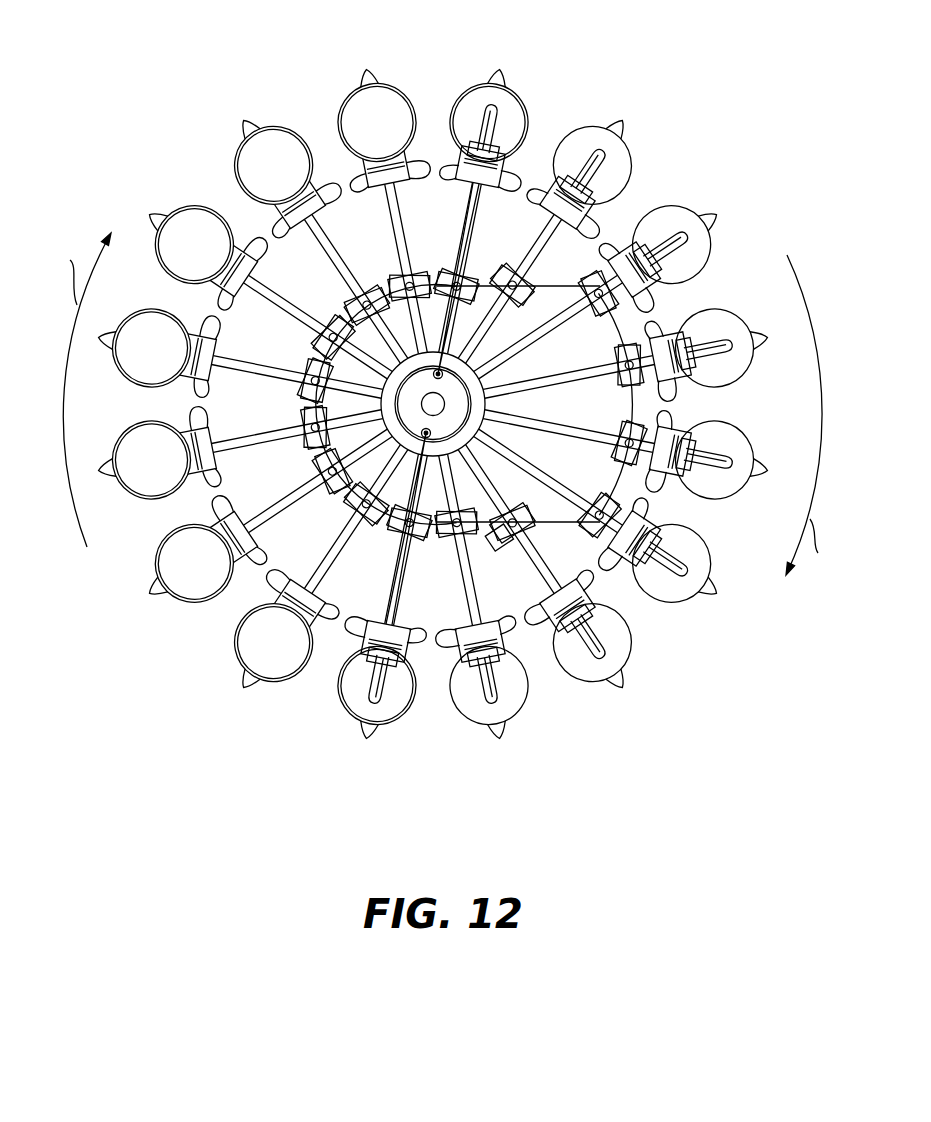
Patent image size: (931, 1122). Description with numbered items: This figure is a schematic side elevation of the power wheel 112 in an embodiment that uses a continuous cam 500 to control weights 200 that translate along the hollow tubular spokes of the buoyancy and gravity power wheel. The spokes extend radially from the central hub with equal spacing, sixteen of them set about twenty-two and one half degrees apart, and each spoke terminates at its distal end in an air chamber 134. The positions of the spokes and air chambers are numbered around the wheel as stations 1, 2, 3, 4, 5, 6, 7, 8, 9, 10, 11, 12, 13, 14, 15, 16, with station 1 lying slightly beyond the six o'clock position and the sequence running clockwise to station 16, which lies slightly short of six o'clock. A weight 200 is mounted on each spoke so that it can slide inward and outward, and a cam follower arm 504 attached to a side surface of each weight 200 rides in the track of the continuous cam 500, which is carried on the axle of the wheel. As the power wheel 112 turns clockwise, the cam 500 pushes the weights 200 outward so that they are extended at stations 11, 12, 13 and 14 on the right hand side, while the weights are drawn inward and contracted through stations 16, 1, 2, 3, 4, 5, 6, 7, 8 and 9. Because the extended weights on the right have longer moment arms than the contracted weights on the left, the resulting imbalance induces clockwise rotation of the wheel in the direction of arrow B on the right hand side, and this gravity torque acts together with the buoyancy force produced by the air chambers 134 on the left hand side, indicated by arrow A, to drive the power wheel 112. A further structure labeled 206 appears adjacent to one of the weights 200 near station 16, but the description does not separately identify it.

The station 1 is at (434, 744).
The station 2 is at (304, 713).
The station 3 is at (202, 641).
The station 4 is at (137, 536).
The station 5 is at (109, 413).
The station 6 is at (129, 291).
The station 7 is at (196, 183).
The station 8 is at (302, 111).
The station 9 is at (426, 84).
The station 10 is at (548, 114).
The station 11 is at (449, 256).
The station 12 is at (723, 293).
The station 13 is at (743, 411).
The station 14 is at (640, 473).
The station 15 is at (648, 641).
The station 16 is at (548, 716).
The power wheel 112 is at (177, 664).
The air chamber 134 is at (391, 82).
The weights 200 is at (509, 282).
The slider extension 206 is at (498, 539).
The continuous cam 500 is at (740, 420).
The cam follower arm 504 is at (623, 362).